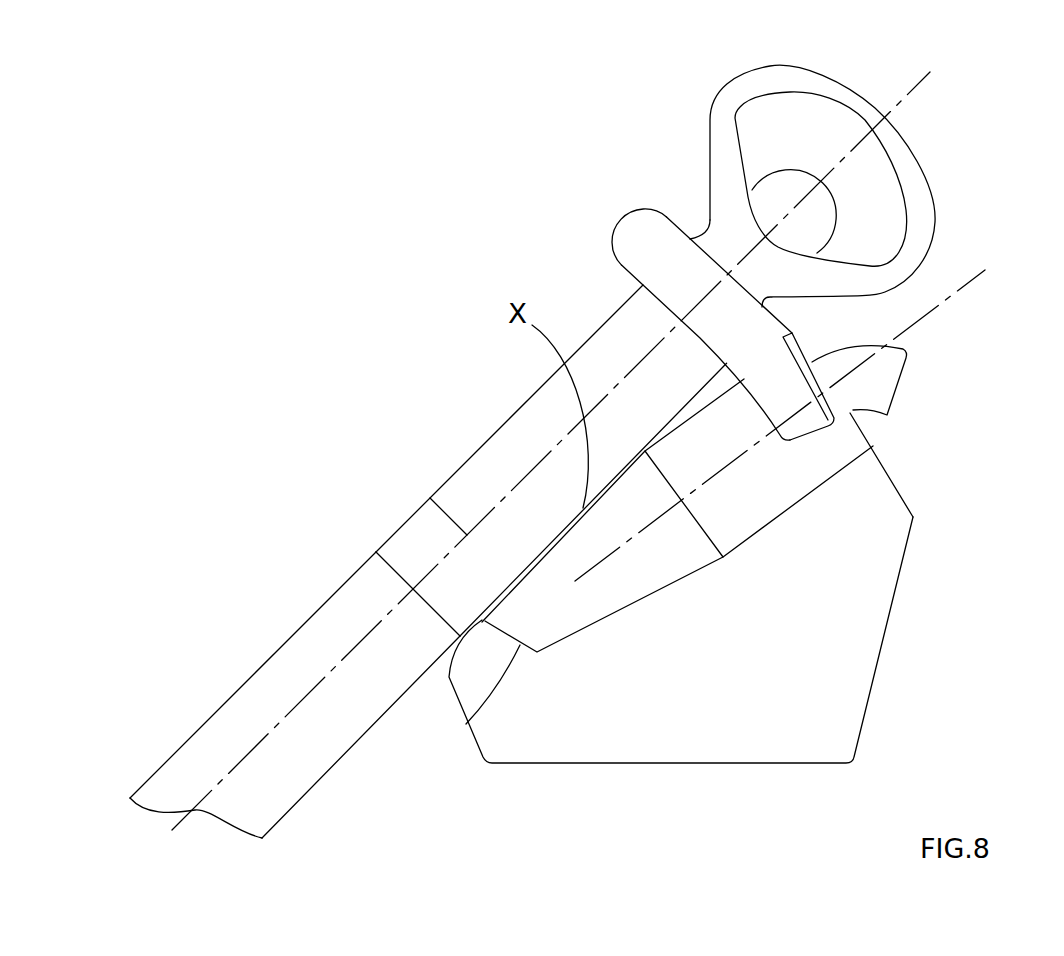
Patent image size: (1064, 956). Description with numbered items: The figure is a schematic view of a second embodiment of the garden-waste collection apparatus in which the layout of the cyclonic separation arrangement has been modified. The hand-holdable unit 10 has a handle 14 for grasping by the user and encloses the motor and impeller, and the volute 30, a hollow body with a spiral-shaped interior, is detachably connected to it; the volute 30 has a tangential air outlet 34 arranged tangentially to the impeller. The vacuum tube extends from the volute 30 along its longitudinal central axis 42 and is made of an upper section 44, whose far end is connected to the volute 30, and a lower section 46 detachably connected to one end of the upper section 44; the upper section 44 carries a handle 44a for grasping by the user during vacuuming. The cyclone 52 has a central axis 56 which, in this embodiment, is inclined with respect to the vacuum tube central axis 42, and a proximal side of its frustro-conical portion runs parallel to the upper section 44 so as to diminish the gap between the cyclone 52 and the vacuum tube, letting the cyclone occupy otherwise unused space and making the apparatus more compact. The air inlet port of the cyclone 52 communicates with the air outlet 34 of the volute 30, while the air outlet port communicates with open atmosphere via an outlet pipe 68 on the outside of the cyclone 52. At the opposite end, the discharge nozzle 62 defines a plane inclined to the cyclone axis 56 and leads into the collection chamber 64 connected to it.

The hand-holdable unit 10 is at (720, 138).
The handle 14 is at (908, 160).
The volute 30 is at (625, 234).
The tangential air outlet 34 is at (763, 347).
The longitudinal central axis 42 is at (422, 490).
The upper section 44 is at (513, 420).
The handle 44a is at (395, 576).
The lower section 46 is at (272, 654).
The cyclone 52 is at (793, 472).
The cyclone central axis 56 is at (922, 318).
The discharge nozzle 62 is at (470, 717).
The collection chamber 64 is at (763, 658).
The outlet pipe 68 is at (880, 388).